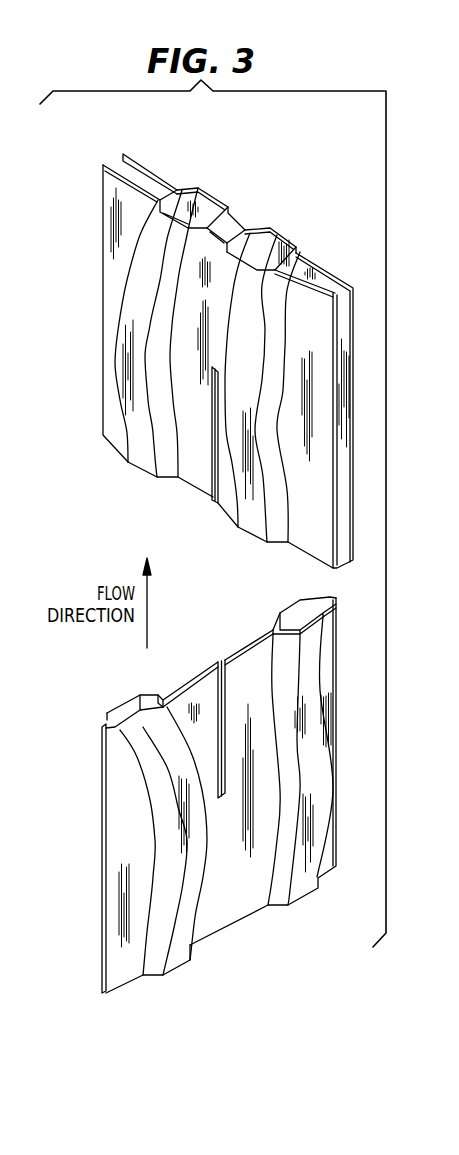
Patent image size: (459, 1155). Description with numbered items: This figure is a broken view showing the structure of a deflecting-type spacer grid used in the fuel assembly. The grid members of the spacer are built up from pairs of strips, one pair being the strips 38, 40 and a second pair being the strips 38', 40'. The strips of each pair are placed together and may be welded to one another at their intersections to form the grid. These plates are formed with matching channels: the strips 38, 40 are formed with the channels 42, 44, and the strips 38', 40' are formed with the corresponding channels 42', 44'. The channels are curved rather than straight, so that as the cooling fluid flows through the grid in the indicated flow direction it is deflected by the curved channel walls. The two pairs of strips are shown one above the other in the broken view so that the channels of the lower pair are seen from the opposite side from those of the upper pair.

The strip 38 is at (340, 410).
The strip 40 is at (283, 387).
The channel 42 is at (202, 195).
The channel 44 is at (135, 328).
The strip 38' is at (73, 849).
The strip 40' is at (263, 795).
The channel 42' is at (142, 692).
The channel 44' is at (168, 843).